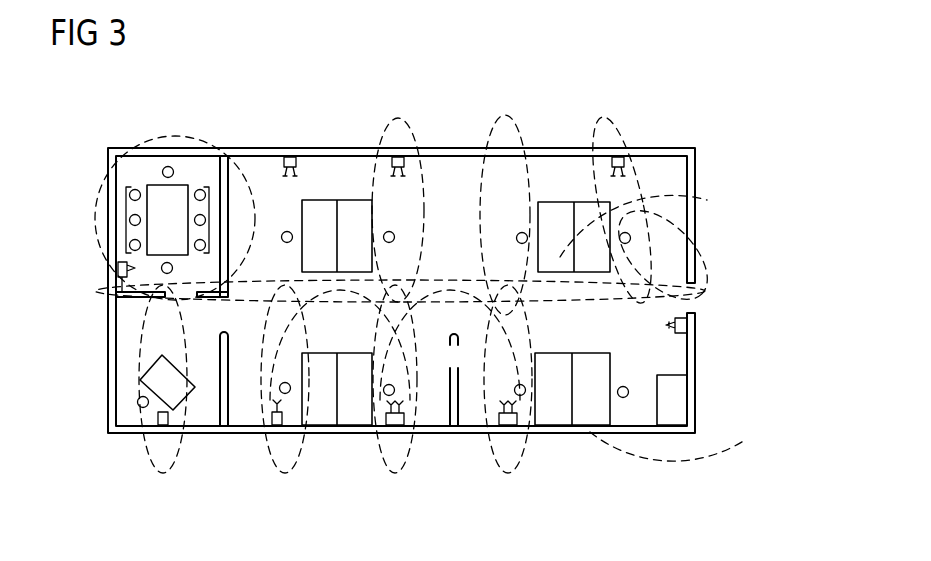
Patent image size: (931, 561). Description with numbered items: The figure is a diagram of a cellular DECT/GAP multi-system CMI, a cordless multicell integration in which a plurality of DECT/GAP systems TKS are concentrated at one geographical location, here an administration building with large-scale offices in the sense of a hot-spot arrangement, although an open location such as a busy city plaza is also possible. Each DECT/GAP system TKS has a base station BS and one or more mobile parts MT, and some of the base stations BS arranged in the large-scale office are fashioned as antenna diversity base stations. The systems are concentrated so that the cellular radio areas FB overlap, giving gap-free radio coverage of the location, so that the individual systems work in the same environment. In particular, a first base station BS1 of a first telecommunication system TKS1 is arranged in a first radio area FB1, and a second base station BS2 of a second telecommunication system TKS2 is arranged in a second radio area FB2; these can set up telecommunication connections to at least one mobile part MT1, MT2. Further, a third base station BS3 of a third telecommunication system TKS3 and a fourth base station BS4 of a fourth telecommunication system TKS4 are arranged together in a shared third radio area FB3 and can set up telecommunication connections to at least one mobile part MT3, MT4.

The mobile part MT is at (171, 166).
The mobile part MT1 is at (630, 242).
The mobile part MT2 is at (522, 238).
The mobile part MT3 is at (393, 385).
The mobile part MT4 is at (518, 385).
The base station BS is at (396, 152).
The first base station BS1 is at (618, 156).
The second base station BS2 is at (688, 332).
The third base station BS3 is at (507, 430).
The fourth base station BS4 is at (395, 430).
The radio area FB is at (126, 100).
The first radio area FB1 is at (705, 265).
The second radio area FB2 is at (705, 458).
The third radio area FB3 is at (635, 457).
The DECT/GAP system TKS is at (98, 252).
The first telecommunication system TKS1 is at (497, 152).
The second telecommunication system TKS2 is at (655, 187).
The third telecommunication system TKS3 is at (640, 461).
The fourth telecommunication system TKS4 is at (530, 445).
The cellular DECT/GAP multi-system CMI is at (443, 152).